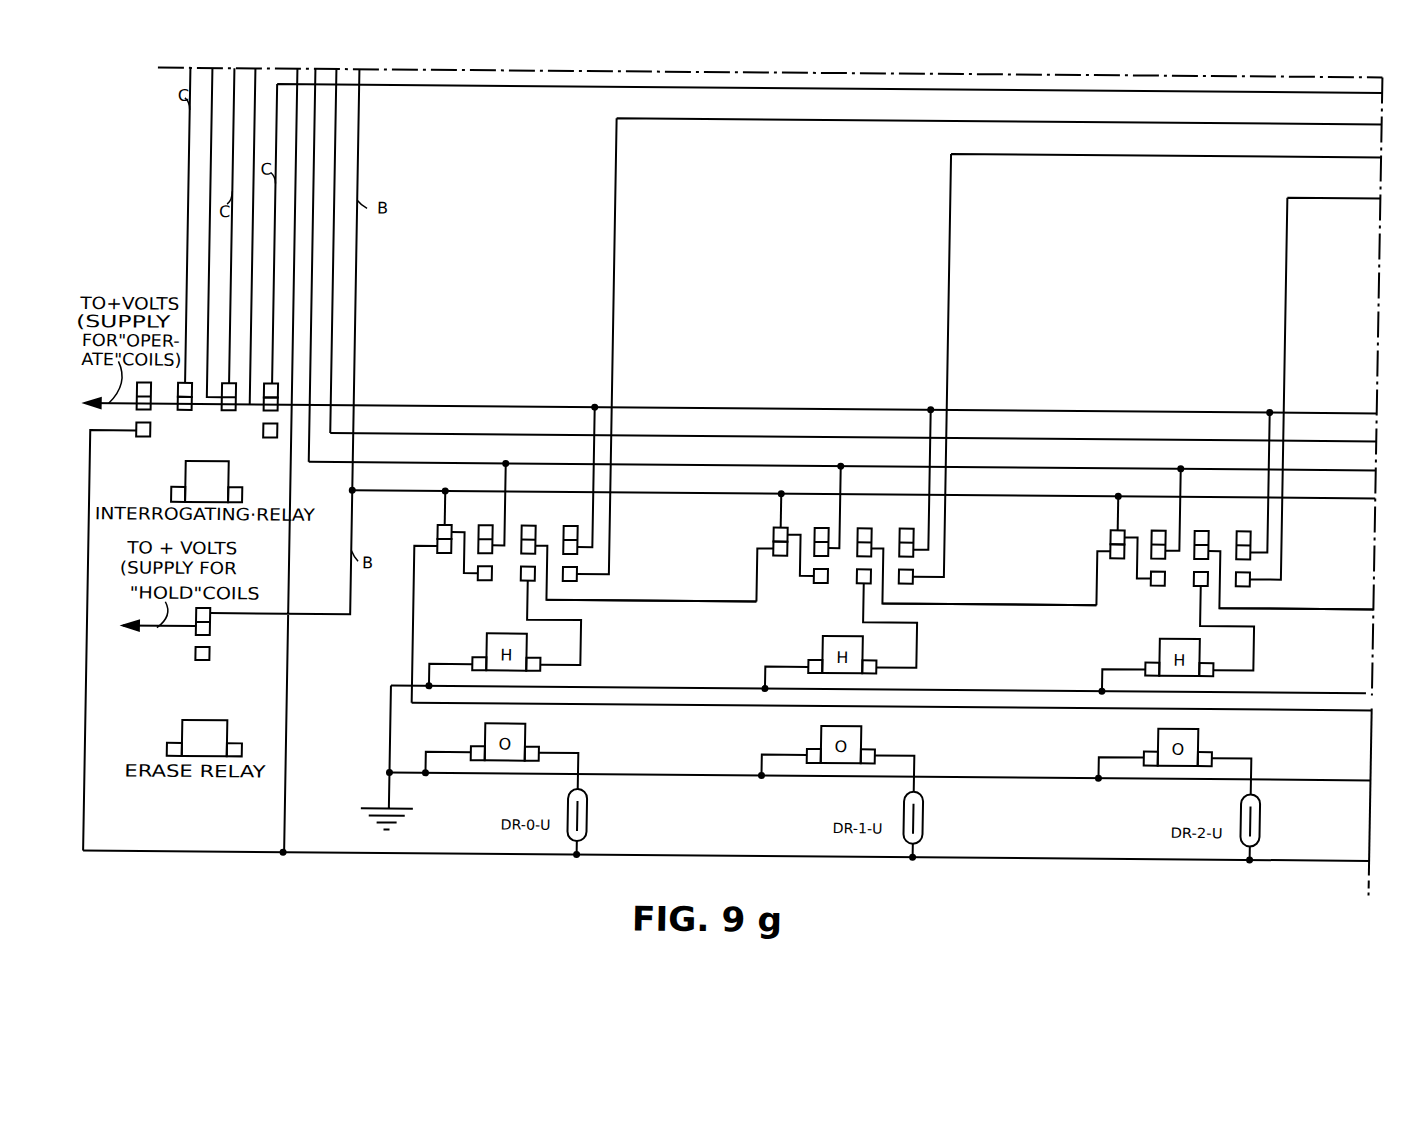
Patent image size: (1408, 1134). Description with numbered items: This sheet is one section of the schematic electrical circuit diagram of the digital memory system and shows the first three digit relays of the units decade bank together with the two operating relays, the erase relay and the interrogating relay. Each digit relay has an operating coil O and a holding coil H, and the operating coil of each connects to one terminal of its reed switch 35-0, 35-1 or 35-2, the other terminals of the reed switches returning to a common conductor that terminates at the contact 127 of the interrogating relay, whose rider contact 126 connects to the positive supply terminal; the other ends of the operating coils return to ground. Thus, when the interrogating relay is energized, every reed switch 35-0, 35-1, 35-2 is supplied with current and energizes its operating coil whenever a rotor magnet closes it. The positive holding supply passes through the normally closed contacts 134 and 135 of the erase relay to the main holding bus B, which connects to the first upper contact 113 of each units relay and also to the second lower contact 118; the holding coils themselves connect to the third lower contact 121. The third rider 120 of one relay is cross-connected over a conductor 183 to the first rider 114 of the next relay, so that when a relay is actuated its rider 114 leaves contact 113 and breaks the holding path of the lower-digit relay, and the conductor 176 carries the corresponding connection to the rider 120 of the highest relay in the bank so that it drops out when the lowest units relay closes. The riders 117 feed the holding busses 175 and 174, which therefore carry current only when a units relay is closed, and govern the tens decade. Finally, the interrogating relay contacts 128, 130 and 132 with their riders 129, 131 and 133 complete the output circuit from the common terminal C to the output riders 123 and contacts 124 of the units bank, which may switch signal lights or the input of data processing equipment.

The first upper set contact 113 is at (440, 531).
The first rider contact 114 is at (440, 549).
The second rider contact 117 is at (480, 543).
The second lower set contact 118 is at (484, 582).
The third rider contact 120 is at (523, 546).
The third lower set contact 121 is at (524, 582).
The fourth rider contact 123 is at (580, 547).
The fourth lower set contact 124 is at (582, 584).
The rider contact of interrogating relay 126 is at (137, 408).
The contact of interrogating relay 127 is at (140, 442).
The interrogating relay contact 128 is at (181, 389).
The interrogating relay rider 129 is at (178, 410).
The interrogating relay contact 130 is at (221, 408).
The interrogating relay rider 131 is at (248, 406).
The interrogating relay contact 132 is at (267, 387).
The interrogating relay rider 133 is at (278, 415).
The normally closed contact of erase relay 134 is at (213, 626).
The normally closed contact of erase relay 135 is at (213, 640).
The holding current bus 174 is at (744, 441).
The holding current bus 175 is at (477, 468).
The conductor 176 is at (1044, 706).
The conductor 183 is at (703, 603).
The reed switch 35-0 is at (601, 824).
The reed switch 35-1 is at (936, 827).
The reed switch 35-2 is at (1268, 797).